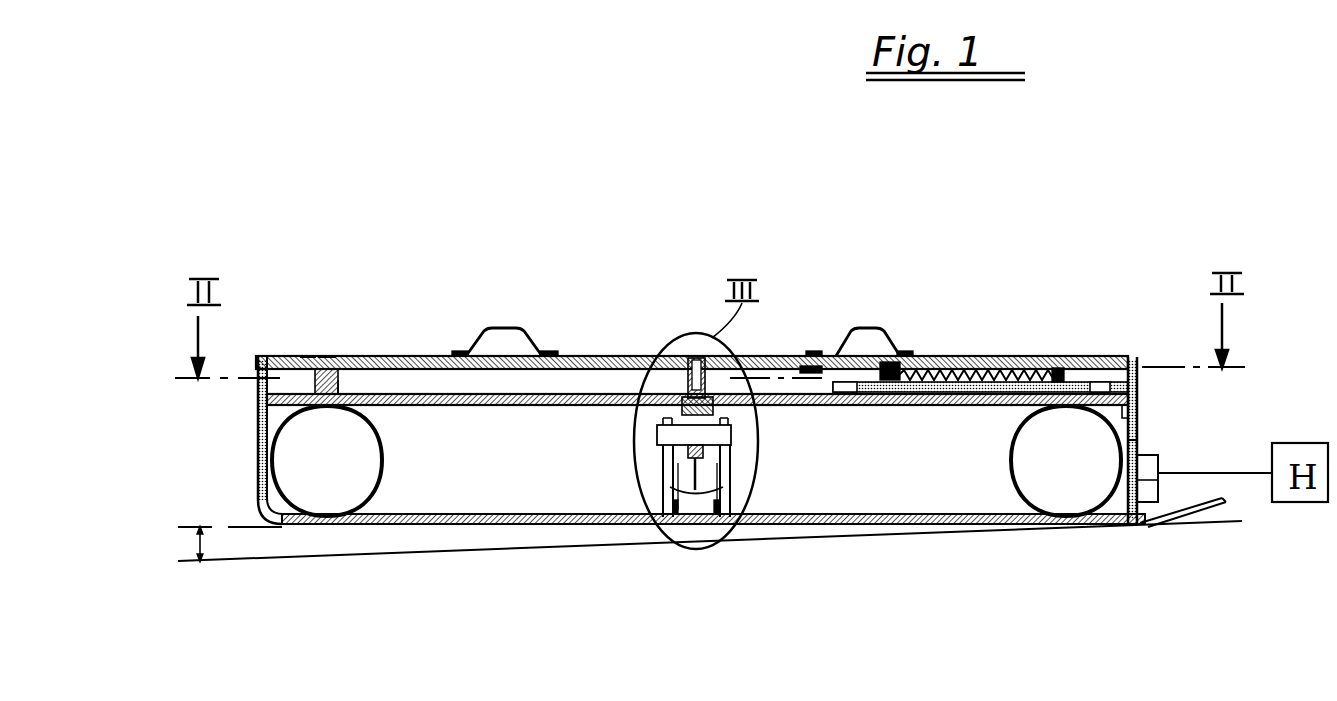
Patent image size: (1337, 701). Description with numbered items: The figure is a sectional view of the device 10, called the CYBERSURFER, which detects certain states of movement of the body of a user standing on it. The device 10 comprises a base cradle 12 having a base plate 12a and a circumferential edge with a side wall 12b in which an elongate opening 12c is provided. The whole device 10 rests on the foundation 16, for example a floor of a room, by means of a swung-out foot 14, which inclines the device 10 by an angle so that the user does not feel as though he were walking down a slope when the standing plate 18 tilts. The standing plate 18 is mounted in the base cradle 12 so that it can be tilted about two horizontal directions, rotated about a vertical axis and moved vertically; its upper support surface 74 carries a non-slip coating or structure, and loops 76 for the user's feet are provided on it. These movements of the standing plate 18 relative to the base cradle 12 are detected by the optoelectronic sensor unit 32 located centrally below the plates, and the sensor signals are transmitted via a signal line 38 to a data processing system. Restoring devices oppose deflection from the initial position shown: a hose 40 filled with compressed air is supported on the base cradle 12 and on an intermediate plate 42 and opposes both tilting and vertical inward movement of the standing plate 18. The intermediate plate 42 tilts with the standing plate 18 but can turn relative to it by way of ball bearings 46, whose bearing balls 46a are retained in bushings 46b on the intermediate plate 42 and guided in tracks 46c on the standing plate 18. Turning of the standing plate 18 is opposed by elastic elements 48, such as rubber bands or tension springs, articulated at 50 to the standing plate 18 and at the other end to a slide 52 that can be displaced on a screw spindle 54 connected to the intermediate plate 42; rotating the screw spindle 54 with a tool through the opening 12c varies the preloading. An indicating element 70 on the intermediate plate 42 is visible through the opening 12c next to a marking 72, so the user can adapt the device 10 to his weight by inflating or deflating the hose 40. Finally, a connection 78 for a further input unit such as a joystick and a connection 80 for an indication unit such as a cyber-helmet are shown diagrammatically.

The device (CYBERSURFER) 10 is at (246, 160).
The base cradle 12 is at (258, 458).
The base plate 12a is at (897, 524).
The side wall 12b is at (1135, 360).
The opening 12c is at (1140, 447).
The swing-out foot 14 is at (382, 514).
The foundation 16 is at (538, 545).
The standing plate 18 is at (275, 356).
The optoelectronic sensor unit 32 is at (738, 476).
The signal line 38 is at (1147, 525).
The hose 40 is at (385, 458).
The intermediate plate 42 is at (472, 407).
The ball bearings 46 is at (343, 357).
The bearing balls 46a is at (322, 356).
The bushings 46b is at (340, 388).
The tracks 46c is at (303, 356).
The elastic elements 48 is at (987, 365).
The articulation point 50 is at (893, 357).
The slide 52 is at (1060, 362).
The screw spindle 54 is at (890, 406).
The indicating element 70 is at (1116, 426).
The marking 72 is at (1140, 412).
The support surface 74 is at (612, 356).
The loops 76 is at (507, 328).
The connection for further input unit 78 is at (1158, 463).
The connection for indication unit 80 is at (1152, 488).